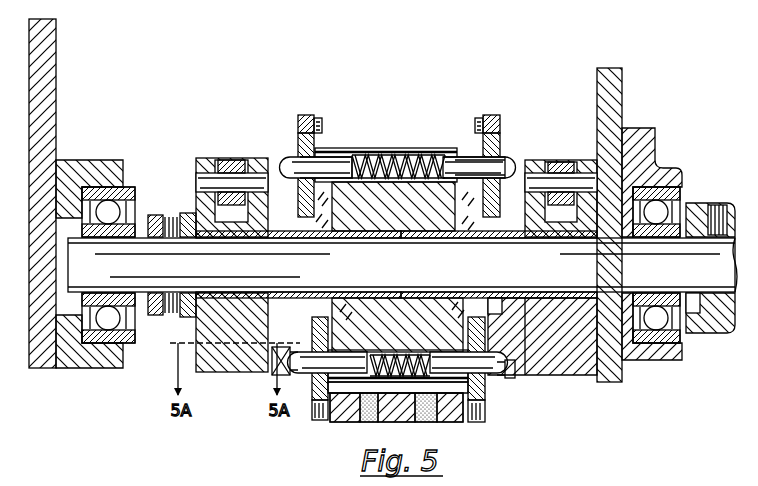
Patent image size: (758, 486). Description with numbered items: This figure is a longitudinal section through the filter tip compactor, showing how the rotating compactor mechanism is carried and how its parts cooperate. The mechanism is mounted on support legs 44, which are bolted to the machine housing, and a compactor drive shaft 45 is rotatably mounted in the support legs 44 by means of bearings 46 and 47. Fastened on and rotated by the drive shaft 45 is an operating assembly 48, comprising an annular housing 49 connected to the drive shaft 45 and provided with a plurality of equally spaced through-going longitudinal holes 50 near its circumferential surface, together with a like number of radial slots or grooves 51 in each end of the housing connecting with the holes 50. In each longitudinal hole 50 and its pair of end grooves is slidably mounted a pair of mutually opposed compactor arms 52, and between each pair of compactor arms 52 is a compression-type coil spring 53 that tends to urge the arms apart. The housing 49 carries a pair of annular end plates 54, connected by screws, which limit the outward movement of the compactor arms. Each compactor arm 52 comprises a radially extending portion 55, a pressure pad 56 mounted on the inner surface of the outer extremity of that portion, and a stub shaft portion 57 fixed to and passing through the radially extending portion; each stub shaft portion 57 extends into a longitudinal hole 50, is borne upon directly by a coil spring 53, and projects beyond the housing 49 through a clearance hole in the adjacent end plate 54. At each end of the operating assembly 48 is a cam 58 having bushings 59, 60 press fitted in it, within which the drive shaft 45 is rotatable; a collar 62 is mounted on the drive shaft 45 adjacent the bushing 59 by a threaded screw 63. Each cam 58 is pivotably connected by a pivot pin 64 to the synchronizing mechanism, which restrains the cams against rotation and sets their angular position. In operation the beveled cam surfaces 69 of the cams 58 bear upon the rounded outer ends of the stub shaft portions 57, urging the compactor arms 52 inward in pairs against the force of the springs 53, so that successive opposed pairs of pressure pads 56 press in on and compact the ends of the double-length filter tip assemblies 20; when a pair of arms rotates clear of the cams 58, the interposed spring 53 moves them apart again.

The double-length filter tip assembly 20 is at (334, 421).
The support leg 44 is at (54, 87).
The compactor drive shaft 45 is at (358, 275).
The bearing 46 is at (128, 200).
The bearing 47 is at (681, 188).
The operating assembly 48 is at (402, 222).
The annular housing 49 is at (443, 157).
The longitudinal hole 50 is at (410, 157).
The radial slot or groove 51 is at (323, 241).
The compactor arm 52 is at (292, 120).
The compression-type coil spring 53 is at (378, 157).
The annular end plate 54 is at (295, 155).
The radially extending portion 55 is at (308, 113).
The pressure pad 56 is at (318, 118).
The stub shaft portion 57 is at (325, 153).
The cam 58 is at (210, 148).
The bushing 59 is at (246, 241).
The bushing 60 is at (523, 241).
The collar 62 is at (155, 214).
The threaded screw 63 is at (170, 215).
The pivot pin 64 is at (232, 173).
The cam surface 69 is at (280, 364).